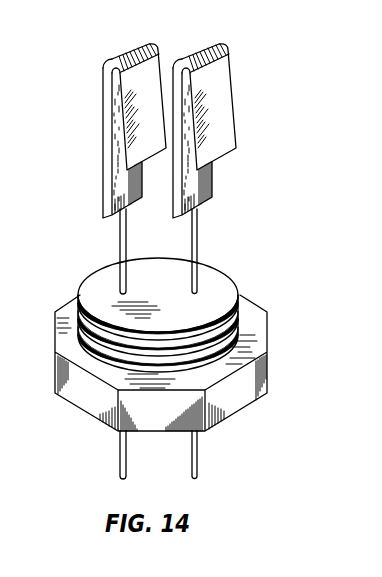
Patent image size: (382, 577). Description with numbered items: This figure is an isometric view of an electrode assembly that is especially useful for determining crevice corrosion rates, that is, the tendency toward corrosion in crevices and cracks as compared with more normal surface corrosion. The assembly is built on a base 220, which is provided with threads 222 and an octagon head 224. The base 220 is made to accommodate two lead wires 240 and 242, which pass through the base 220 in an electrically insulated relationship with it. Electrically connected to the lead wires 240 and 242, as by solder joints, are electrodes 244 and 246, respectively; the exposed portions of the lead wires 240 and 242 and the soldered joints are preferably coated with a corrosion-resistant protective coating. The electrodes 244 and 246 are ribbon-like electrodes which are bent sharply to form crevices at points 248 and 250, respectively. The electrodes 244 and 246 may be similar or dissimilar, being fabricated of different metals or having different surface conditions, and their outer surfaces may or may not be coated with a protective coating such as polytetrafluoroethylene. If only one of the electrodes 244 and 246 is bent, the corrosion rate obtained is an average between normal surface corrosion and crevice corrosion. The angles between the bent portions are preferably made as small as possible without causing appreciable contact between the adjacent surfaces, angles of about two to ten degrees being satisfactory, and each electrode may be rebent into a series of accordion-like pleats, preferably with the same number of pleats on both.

The base 220 is at (330, 350).
The threads 222 is at (235, 313).
The octagon head 224 is at (256, 380).
The lead wire 240 is at (119, 246).
The lead wire 242 is at (198, 237).
The electrode 244 is at (135, 51).
The electrode 246 is at (217, 48).
The crevice point 248 is at (109, 77).
The crevice point 250 is at (186, 77).